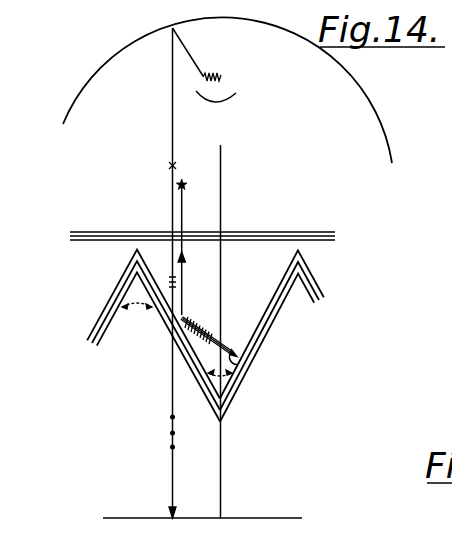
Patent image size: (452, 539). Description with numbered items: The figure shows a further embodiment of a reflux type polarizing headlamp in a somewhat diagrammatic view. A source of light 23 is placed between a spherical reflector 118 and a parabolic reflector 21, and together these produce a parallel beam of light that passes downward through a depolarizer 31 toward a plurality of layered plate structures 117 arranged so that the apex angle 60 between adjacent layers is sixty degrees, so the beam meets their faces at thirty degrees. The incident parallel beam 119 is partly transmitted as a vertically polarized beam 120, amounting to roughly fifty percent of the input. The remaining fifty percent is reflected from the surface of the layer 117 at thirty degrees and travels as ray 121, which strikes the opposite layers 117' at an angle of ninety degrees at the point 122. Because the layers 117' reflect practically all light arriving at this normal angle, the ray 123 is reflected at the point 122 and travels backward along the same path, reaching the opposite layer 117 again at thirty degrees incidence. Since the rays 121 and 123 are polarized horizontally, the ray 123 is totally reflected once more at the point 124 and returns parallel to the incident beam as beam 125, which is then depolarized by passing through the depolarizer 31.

The parabolic reflector 21 is at (358, 98).
The source of light 23 is at (219, 72).
The spherical reflector 118 is at (229, 101).
The incident parallel beam 119 is at (172, 144).
The polarized beam 120 is at (172, 392).
The returned beam 125 is at (182, 219).
The depolarizer 31 is at (336, 235).
The layer combination plates 117 is at (152, 336).
The opposite layers 117' is at (293, 335).
The point of total reflection 124 is at (182, 318).
The reflected ray 121 is at (207, 328).
The point of normal incidence 122 is at (237, 354).
The reflected return ray 123 is at (240, 366).
The angle 60 degrees 60 is at (139, 319).